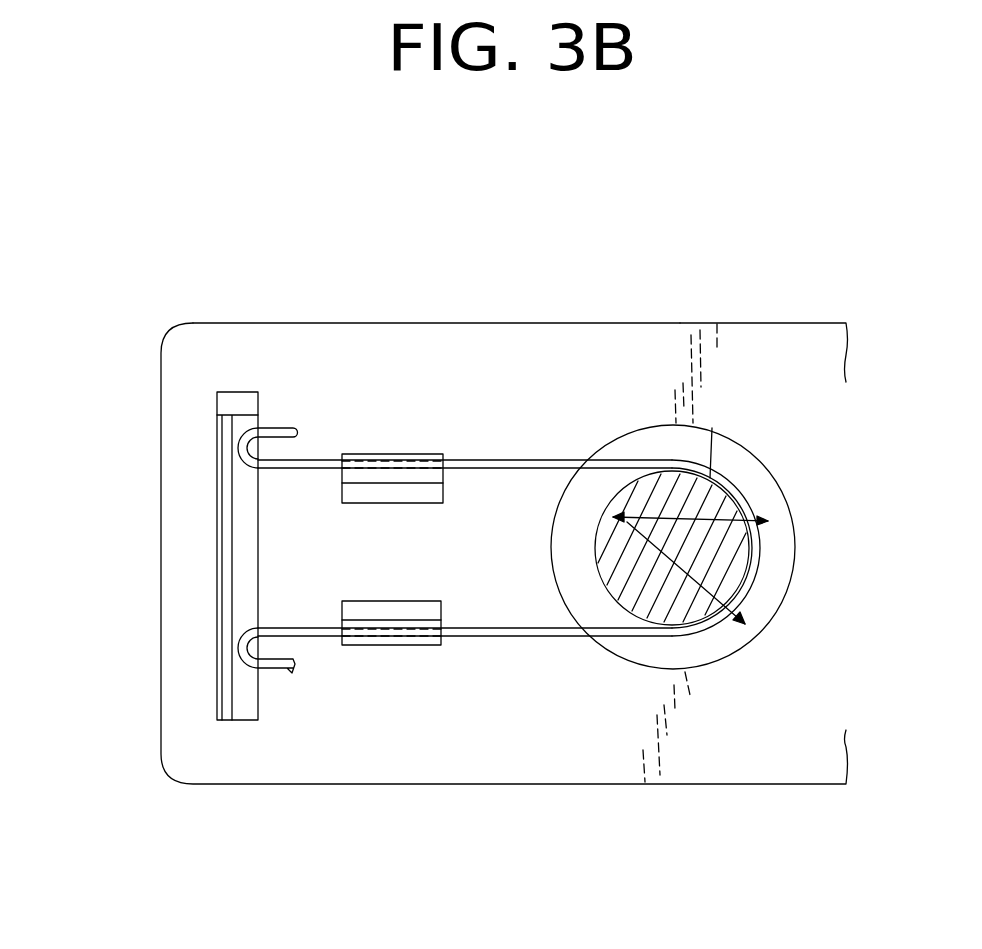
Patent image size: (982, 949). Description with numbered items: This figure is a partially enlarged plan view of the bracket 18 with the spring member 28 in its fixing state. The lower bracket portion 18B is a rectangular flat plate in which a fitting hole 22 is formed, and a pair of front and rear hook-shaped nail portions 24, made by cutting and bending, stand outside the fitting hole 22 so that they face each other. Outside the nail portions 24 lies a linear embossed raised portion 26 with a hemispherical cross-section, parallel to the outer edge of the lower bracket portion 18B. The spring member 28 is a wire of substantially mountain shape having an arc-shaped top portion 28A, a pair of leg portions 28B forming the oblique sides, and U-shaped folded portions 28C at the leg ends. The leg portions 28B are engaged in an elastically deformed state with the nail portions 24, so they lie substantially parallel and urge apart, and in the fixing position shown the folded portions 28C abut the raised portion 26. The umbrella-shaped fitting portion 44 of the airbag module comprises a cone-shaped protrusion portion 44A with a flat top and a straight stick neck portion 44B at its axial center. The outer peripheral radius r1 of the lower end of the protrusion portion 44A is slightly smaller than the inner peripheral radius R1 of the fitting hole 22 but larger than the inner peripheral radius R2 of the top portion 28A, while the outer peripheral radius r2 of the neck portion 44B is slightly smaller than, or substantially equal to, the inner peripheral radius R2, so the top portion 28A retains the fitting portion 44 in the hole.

The bracket 18 is at (681, 323).
The lower bracket portion 18B is at (538, 342).
The fitting hole 22 is at (785, 580).
The nail portion 24 is at (380, 454).
The raised portion 26 is at (237, 593).
The spring member 28 is at (549, 534).
The top portion 28A is at (747, 492).
The leg portion 28B is at (466, 459).
The folded portion 28C is at (290, 427).
The fitting portion 44 is at (664, 625).
The protrusion portion 44A is at (700, 647).
The neck portion 44B is at (603, 637).
The inner peripheral radius of the fitting hole R1 is at (746, 623).
The inner peripheral radius of the top portion R2 is at (713, 427).
The outer peripheral radius of the protrusion portion lower end r1 is at (769, 521).
The outer peripheral radius of the neck portion r2 is at (613, 517).